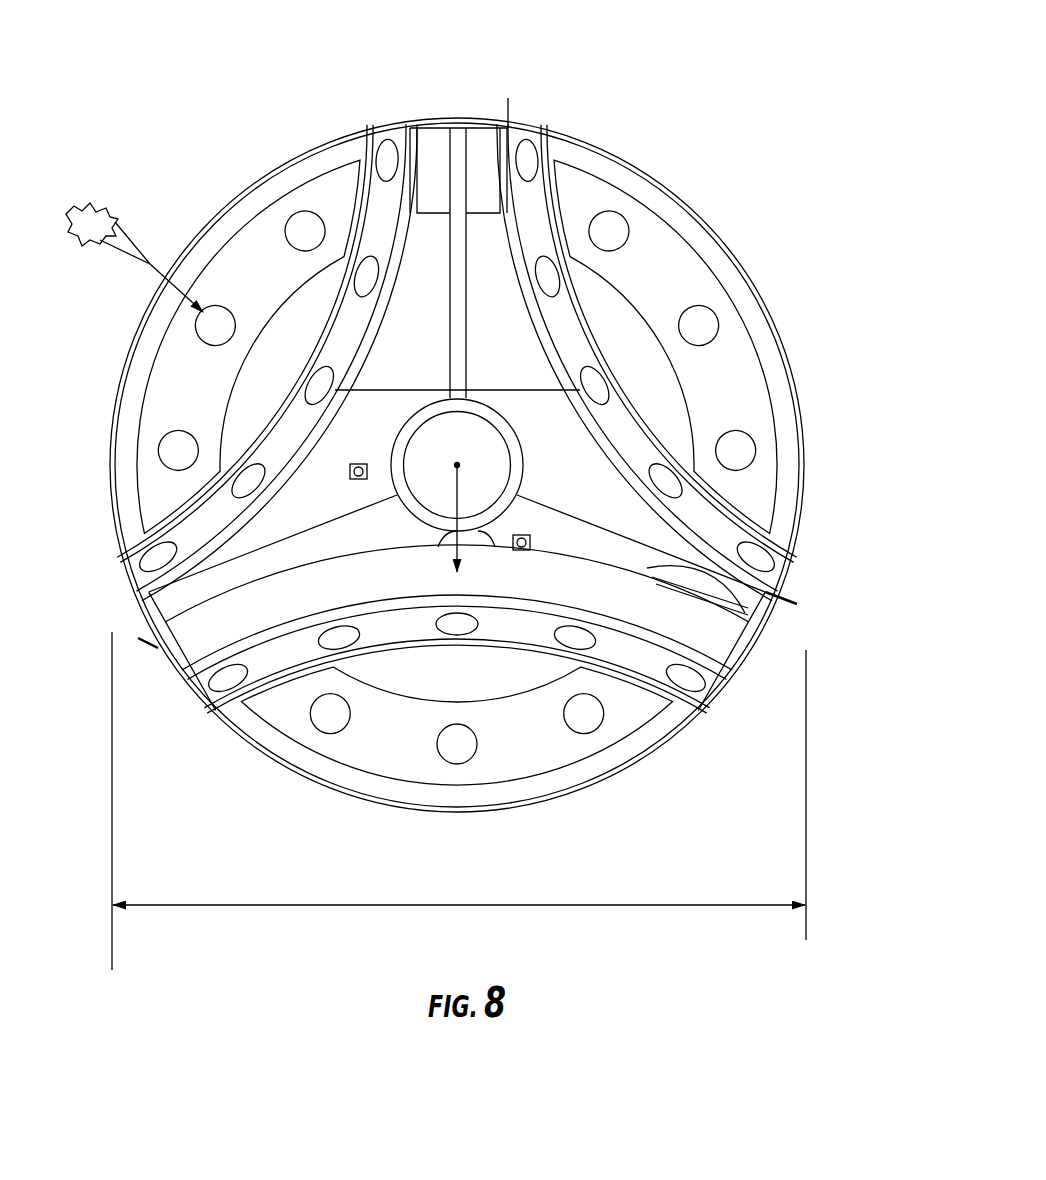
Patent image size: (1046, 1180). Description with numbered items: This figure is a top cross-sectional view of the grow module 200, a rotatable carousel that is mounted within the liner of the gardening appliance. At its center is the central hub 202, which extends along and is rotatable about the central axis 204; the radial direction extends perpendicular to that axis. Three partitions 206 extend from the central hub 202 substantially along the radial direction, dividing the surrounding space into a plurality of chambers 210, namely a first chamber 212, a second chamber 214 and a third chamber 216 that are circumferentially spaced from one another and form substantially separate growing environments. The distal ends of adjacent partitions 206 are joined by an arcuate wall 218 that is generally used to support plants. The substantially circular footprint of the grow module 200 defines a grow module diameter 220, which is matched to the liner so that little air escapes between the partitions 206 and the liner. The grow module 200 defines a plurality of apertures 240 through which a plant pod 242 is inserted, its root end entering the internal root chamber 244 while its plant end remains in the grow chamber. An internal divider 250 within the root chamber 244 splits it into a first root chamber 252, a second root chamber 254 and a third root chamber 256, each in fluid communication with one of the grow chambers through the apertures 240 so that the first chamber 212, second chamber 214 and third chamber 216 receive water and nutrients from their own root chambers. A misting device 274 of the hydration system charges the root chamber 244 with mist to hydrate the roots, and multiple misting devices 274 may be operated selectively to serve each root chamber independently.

The grow module 200 is at (826, 114).
The central hub 202 is at (524, 455).
The central axis 204 is at (457, 465).
The partitions 206 is at (672, 645).
The plurality of chambers 210 is at (673, 398).
The first chamber 212 is at (638, 340).
The second chamber 214 is at (270, 290).
The third chamber 216 is at (520, 752).
The arcuate wall 218 is at (600, 620).
The grow module diameter 220 is at (203, 905).
The apertures 240 is at (320, 738).
The plant pod 242 is at (112, 256).
The root chamber 244 is at (263, 612).
The internal divider 250 is at (745, 614).
The first root chamber 252 is at (518, 304).
The second root chamber 254 is at (443, 304).
The third root chamber 256 is at (366, 594).
The misting device 274 is at (357, 479).